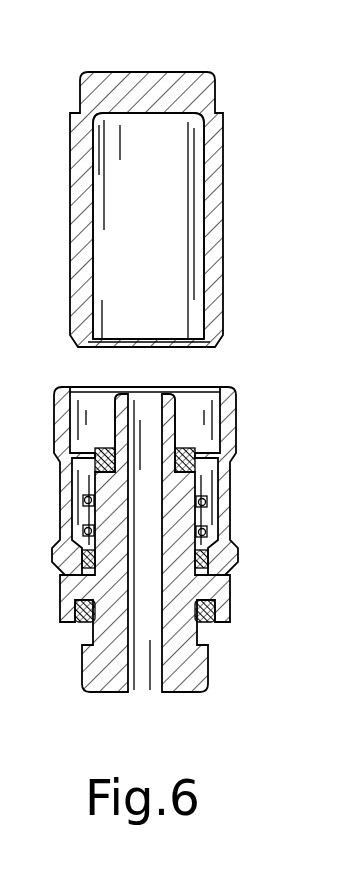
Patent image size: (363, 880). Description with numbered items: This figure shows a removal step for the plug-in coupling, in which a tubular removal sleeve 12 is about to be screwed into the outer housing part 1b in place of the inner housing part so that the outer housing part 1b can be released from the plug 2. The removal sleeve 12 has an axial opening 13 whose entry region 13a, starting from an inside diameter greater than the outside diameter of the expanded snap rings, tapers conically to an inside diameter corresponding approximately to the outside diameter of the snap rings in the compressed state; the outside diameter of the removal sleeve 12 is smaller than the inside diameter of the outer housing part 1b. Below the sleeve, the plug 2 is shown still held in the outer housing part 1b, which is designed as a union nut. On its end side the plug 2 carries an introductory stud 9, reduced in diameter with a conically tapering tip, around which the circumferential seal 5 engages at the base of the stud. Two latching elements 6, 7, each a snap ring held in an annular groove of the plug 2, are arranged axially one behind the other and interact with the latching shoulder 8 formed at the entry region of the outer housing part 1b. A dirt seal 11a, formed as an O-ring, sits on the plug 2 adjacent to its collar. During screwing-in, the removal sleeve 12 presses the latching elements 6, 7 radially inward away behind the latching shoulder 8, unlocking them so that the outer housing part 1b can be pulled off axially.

The removal sleeve 12 is at (210, 93).
The axial opening 13 is at (178, 307).
The entry region 13a is at (108, 350).
The outer housing part 1b is at (233, 400).
The plug 2 is at (187, 667).
The introductory stud 9 is at (174, 410).
The circumferential seal 5 is at (200, 452).
The latching element 6 is at (207, 503).
The latching element 7 is at (205, 532).
The latching shoulder 8 is at (208, 558).
The dirt seal 11a is at (208, 568).